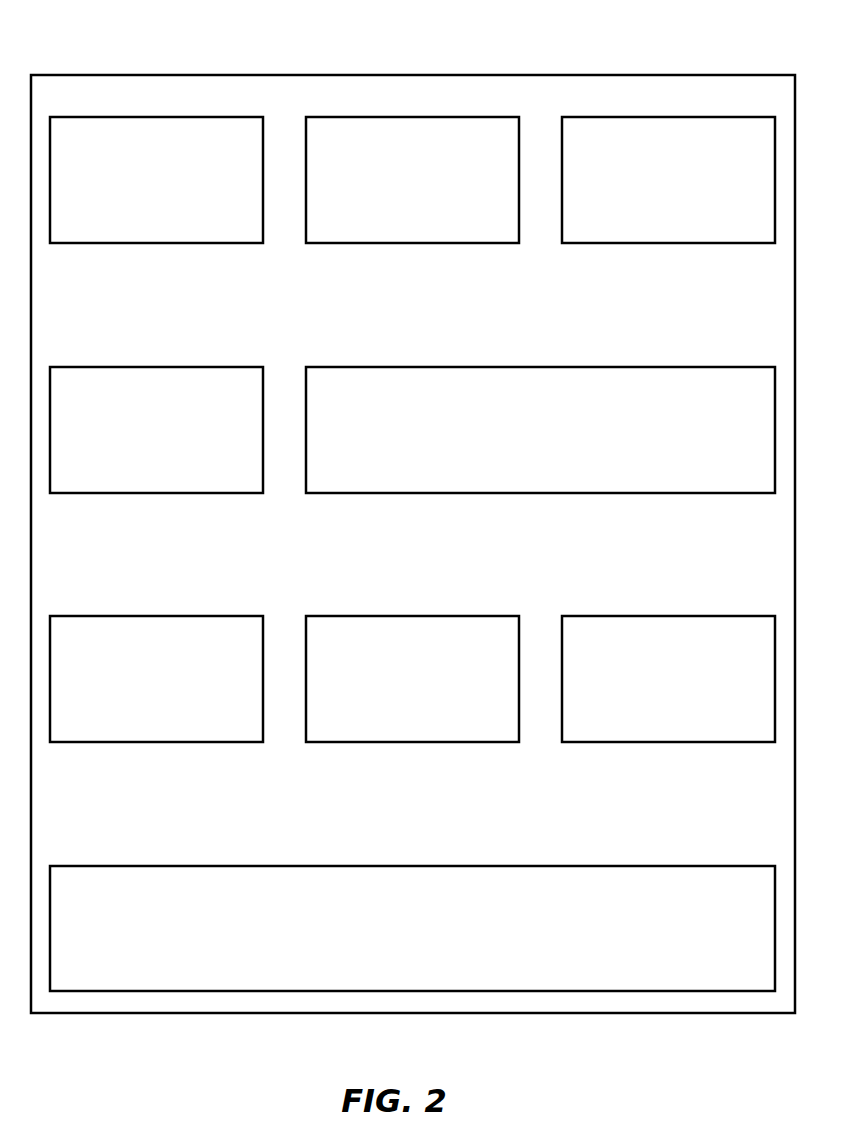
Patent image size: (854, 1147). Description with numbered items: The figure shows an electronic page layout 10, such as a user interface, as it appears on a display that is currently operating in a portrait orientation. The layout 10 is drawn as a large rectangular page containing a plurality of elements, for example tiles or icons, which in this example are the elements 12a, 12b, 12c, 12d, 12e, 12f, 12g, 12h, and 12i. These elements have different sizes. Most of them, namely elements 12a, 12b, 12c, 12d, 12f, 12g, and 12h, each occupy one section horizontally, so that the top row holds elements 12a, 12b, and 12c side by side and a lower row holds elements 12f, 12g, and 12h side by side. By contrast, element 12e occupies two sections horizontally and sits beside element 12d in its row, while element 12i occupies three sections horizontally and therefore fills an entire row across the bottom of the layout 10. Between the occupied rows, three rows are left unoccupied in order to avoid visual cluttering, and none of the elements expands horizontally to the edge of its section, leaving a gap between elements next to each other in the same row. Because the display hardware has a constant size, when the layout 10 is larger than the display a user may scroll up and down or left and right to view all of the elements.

The electronic page layout 10 is at (668, 73).
The element 12a is at (156, 180).
The element 12b is at (412, 180).
The element 12c is at (668, 180).
The element 12d is at (156, 430).
The element 12e is at (540, 430).
The element 12f is at (156, 679).
The element 12g is at (412, 679).
The element 12h is at (668, 679).
The element 12i is at (412, 928).